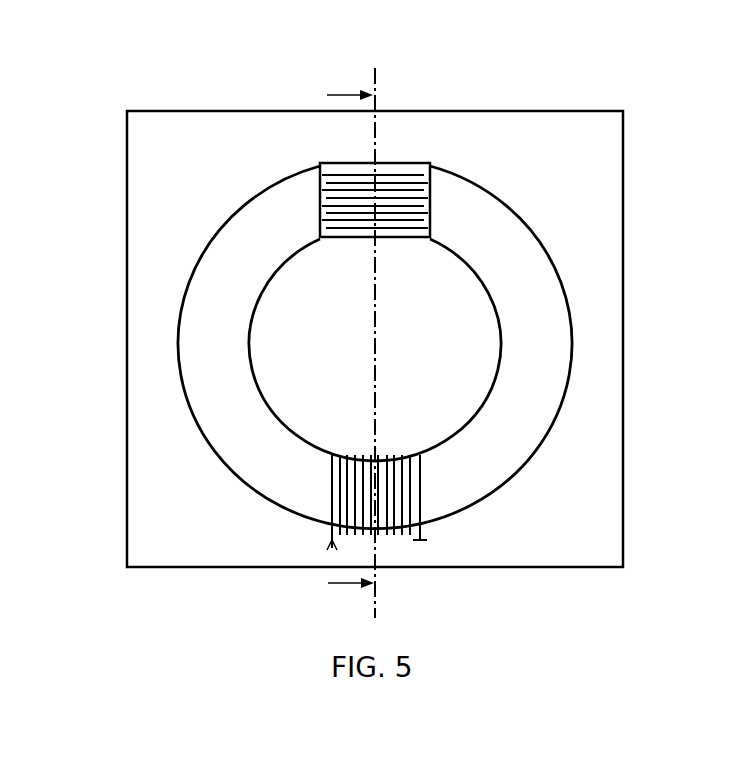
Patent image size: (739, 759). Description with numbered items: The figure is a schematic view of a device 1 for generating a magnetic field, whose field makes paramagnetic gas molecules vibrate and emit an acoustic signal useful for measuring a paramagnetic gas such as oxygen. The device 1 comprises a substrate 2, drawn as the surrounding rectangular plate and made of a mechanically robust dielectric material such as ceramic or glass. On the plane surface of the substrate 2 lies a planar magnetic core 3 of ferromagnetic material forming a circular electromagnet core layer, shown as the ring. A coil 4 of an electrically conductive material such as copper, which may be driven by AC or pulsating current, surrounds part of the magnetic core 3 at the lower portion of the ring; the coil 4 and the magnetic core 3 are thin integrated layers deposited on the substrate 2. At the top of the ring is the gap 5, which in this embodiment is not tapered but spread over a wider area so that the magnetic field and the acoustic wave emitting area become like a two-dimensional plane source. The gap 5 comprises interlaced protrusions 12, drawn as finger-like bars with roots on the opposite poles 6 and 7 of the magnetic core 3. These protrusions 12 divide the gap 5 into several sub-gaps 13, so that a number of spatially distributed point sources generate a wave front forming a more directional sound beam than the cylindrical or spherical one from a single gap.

The device for generating a magnetic field 1 is at (104, 428).
The substrate 2 is at (150, 187).
The magnetic core 3 is at (477, 512).
The coil 4 is at (330, 533).
The gap 5 is at (383, 157).
The pole 6 is at (298, 172).
The pole 7 is at (457, 197).
The protrusion 12 is at (408, 163).
The sub-gap 13 is at (327, 168).